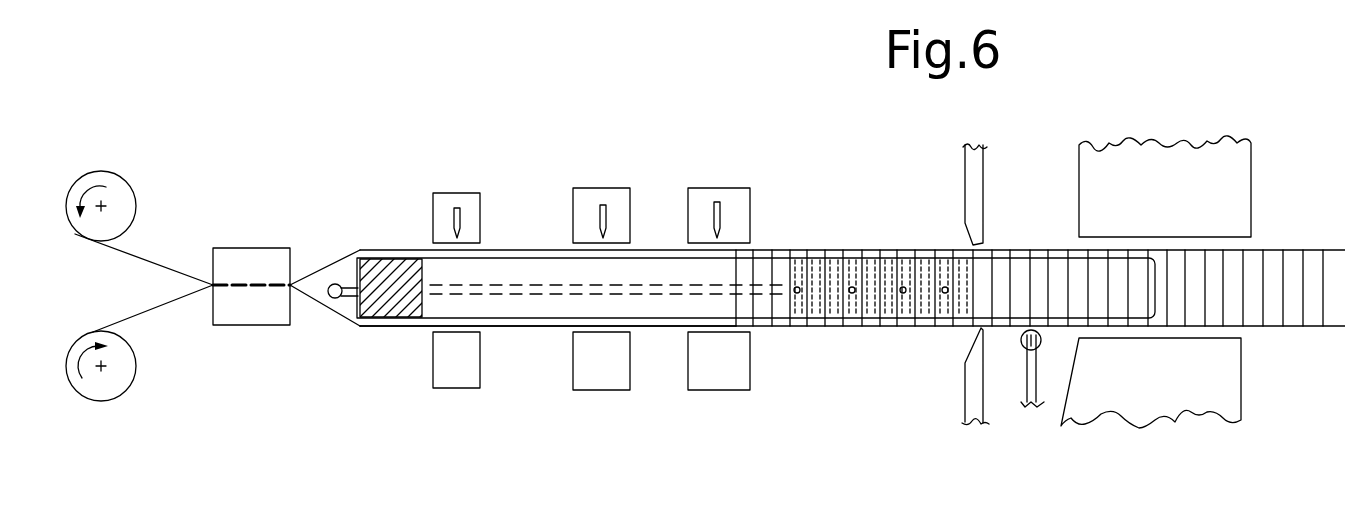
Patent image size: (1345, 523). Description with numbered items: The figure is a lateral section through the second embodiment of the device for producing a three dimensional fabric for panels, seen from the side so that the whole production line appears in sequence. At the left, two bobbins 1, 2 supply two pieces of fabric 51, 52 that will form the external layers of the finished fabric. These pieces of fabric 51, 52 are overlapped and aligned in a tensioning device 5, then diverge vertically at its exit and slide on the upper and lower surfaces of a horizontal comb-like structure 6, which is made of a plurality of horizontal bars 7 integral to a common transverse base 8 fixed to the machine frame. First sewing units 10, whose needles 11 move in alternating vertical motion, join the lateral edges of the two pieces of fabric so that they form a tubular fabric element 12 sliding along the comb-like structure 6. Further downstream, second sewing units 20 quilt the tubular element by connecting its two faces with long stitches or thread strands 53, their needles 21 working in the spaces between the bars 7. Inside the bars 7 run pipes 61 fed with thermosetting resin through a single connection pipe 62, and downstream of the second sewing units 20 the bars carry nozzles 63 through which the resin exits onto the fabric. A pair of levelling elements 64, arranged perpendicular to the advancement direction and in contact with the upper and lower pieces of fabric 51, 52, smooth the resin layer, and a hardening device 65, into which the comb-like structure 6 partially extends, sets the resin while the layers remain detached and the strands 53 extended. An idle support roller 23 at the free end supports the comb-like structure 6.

The bobbin 1 is at (110, 188).
The bobbin 2 is at (115, 382).
The tensioning device 5 is at (242, 272).
The comb-like structure 6 is at (509, 240).
The bars 7 is at (508, 302).
The transverse base 8 is at (390, 318).
The first sewing units 10 is at (465, 203).
The needles 11 is at (455, 213).
The tubular fabric element 12 is at (550, 327).
The second sewing units 20 is at (615, 198).
The needles 21 is at (603, 207).
The idle support roller 23 is at (1025, 338).
The piece of fabric 51 is at (142, 258).
The piece of fabric 52 is at (155, 310).
The thread strands 53 is at (831, 327).
The pipes 61 is at (655, 287).
The connection pipe 62 is at (338, 297).
The nozzles 63 is at (935, 285).
The levelling elements 64 is at (972, 175).
The hardening device 65 is at (1167, 163).